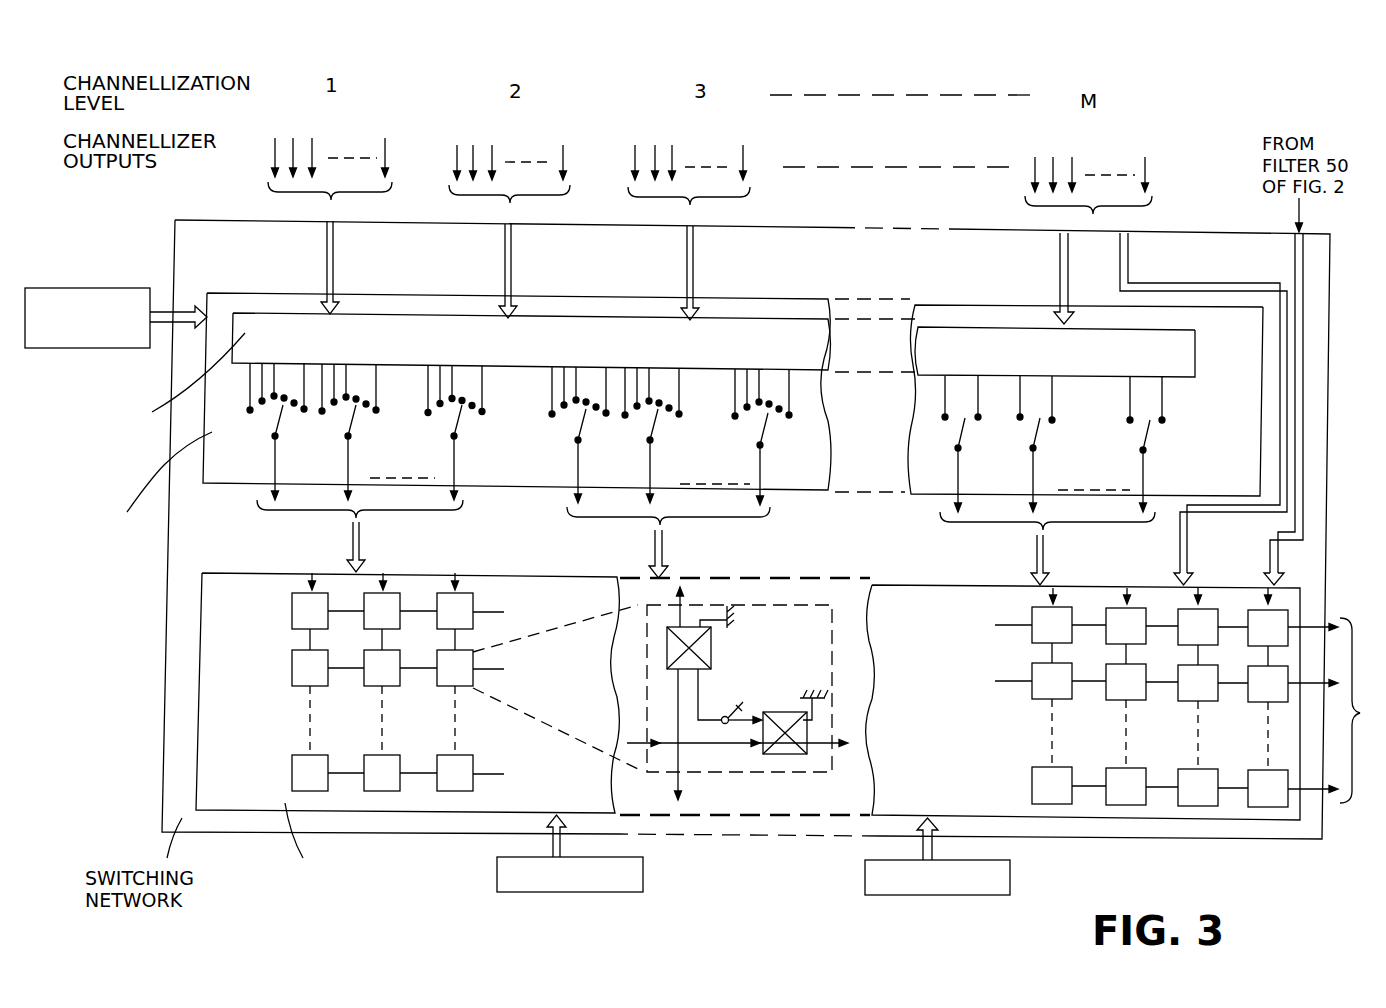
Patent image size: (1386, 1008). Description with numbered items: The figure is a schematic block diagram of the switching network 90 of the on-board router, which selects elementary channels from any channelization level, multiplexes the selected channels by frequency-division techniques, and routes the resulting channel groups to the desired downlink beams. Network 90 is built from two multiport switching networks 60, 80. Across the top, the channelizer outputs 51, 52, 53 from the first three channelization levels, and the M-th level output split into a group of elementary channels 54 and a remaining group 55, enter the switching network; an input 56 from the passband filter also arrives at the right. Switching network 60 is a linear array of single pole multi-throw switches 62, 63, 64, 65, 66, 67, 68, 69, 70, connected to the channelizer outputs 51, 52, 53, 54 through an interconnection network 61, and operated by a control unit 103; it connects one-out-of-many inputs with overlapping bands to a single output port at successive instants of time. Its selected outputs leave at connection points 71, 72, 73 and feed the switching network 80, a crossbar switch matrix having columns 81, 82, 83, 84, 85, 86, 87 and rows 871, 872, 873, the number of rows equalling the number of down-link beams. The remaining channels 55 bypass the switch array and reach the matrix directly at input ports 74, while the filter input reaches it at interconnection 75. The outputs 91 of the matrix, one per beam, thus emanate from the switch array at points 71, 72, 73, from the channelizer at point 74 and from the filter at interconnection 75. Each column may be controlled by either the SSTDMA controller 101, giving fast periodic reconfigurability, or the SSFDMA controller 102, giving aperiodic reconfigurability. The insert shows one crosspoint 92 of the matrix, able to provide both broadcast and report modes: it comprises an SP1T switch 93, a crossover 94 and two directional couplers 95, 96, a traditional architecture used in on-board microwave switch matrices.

The channelizer output 51 is at (331, 215).
The channelizer output 52 is at (509, 218).
The channelizer output 53 is at (691, 220).
The group of elementary channels 54 is at (1083, 227).
The group of elementary channels 55 is at (1201, 393).
The output 56 is at (1300, 385).
The switching network 60 is at (243, 293).
The interconnection network 61 is at (288, 313).
The SPmT switch 62 is at (287, 452).
The SPmT switch 63 is at (360, 452).
The SPmT switch 64 is at (467, 452).
The SPmT switch 65 is at (591, 456).
The SPmT switch 66 is at (662, 456).
The SPmT switch 67 is at (780, 459).
The SPmT switch 68 is at (971, 465).
The SPmT switch 69 is at (1046, 465).
The SPmT switch 70 is at (1180, 466).
The connection point 71 is at (360, 536).
The connection point 72 is at (668, 542).
The connection point 73 is at (1047, 548).
The connection point 74 is at (1193, 561).
The interconnection 75 is at (1264, 561).
The switching network 80 is at (259, 573).
The column 81 is at (310, 674).
The column 82 is at (382, 674).
The column 83 is at (455, 674).
The column 84 is at (1052, 686).
The column 85 is at (1126, 686).
The column 86 is at (1198, 688).
The column 87 is at (1274, 688).
The row 871 is at (374, 612).
The row 872 is at (374, 668).
The row 873 is at (371, 773).
The switching network 90 is at (167, 630).
The outputs 91 is at (1125, 702).
The switch matrix crosspoint 92 is at (812, 642).
The SP1T switch 93 is at (742, 705).
The crossover 94 is at (676, 738).
The directional coupler 95 is at (801, 752).
The directional coupler 96 is at (711, 650).
The SSTDMA controller 101 is at (522, 893).
The SSFDMA controller 102 is at (898, 897).
The control unit 103 is at (115, 292).